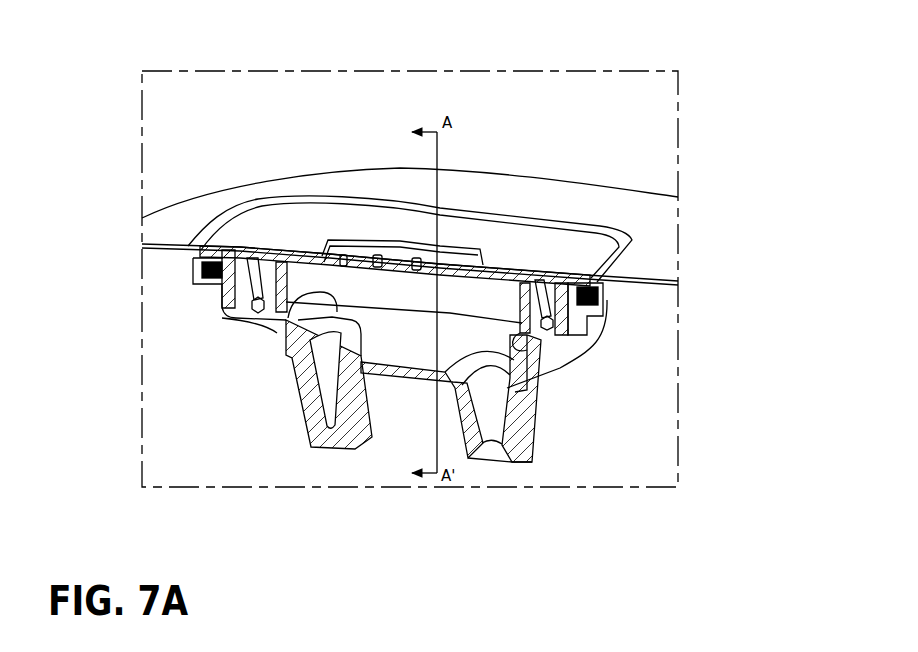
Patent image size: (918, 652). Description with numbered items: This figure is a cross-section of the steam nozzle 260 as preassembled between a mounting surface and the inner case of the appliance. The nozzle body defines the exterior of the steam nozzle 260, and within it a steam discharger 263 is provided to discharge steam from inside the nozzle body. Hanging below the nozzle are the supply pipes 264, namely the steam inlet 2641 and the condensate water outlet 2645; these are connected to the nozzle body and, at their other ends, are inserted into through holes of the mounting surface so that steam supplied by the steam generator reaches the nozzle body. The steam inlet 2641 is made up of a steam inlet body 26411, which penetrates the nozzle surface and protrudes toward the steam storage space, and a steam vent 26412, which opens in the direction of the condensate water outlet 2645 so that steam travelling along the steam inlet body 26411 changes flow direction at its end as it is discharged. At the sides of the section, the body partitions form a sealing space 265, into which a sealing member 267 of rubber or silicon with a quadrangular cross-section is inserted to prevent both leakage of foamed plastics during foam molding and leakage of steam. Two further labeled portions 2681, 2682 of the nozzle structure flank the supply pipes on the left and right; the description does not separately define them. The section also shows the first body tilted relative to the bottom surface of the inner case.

The steam nozzle 260 is at (246, 231).
The steam discharger 263 is at (403, 240).
The support column 264 is at (484, 570).
The sealing space 265 is at (592, 282).
The sealing member 267 is at (200, 267).
The steam inlet 2641 is at (327, 433).
The condensate water outlet 2645 is at (490, 447).
The first holding portion 2681 is at (222, 304).
The second holding portion 2682 is at (541, 340).
The steam inlet body 26411 is at (284, 335).
The steam vent 26412 is at (345, 330).